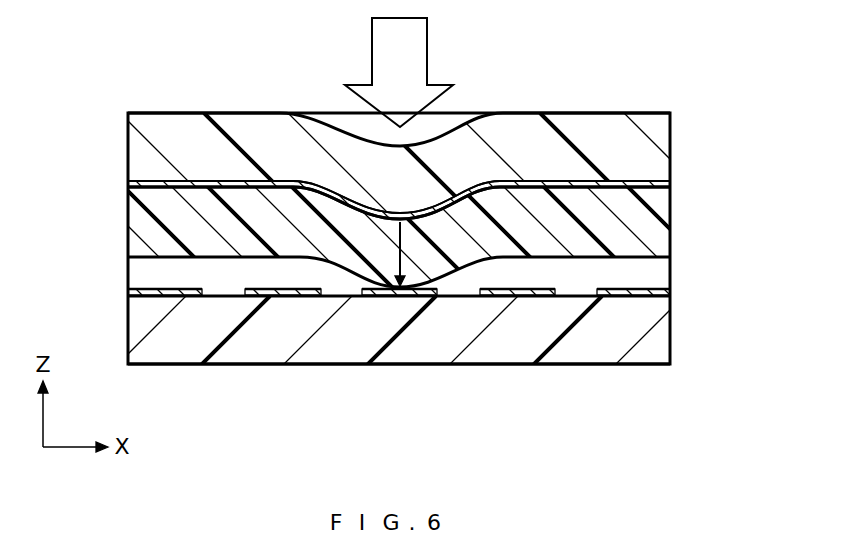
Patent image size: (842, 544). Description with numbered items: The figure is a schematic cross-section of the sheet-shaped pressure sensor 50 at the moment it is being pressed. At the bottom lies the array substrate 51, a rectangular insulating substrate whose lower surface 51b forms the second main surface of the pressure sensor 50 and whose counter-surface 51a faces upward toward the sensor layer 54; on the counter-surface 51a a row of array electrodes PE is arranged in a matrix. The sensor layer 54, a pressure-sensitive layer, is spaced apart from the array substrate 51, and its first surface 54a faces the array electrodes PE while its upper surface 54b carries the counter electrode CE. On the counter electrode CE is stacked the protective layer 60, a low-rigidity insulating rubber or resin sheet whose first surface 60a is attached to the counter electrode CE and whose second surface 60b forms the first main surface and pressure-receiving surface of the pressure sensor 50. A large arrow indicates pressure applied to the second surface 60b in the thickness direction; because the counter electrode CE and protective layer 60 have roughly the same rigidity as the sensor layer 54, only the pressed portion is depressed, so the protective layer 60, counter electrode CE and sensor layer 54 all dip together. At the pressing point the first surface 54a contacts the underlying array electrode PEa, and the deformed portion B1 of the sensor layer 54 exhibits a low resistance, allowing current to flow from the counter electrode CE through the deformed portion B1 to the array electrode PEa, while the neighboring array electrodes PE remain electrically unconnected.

The pressure sensor 50 is at (657, 96).
The protective layer 60 is at (665, 142).
The first surface 60a is at (237, 187).
The second surface 60b is at (577, 113).
The counter electrode CE is at (627, 188).
The sensor layer 54 is at (665, 228).
The first surface 54a is at (160, 258).
The upper surface of dielectric layer 54b is at (160, 183).
The deformed portion B1 is at (413, 252).
The array electrode PE is at (160, 288).
The array electrode PEa is at (400, 296).
The array substrate 51 is at (663, 332).
The counter-surface 51a is at (215, 297).
The lower surface 51b is at (337, 364).